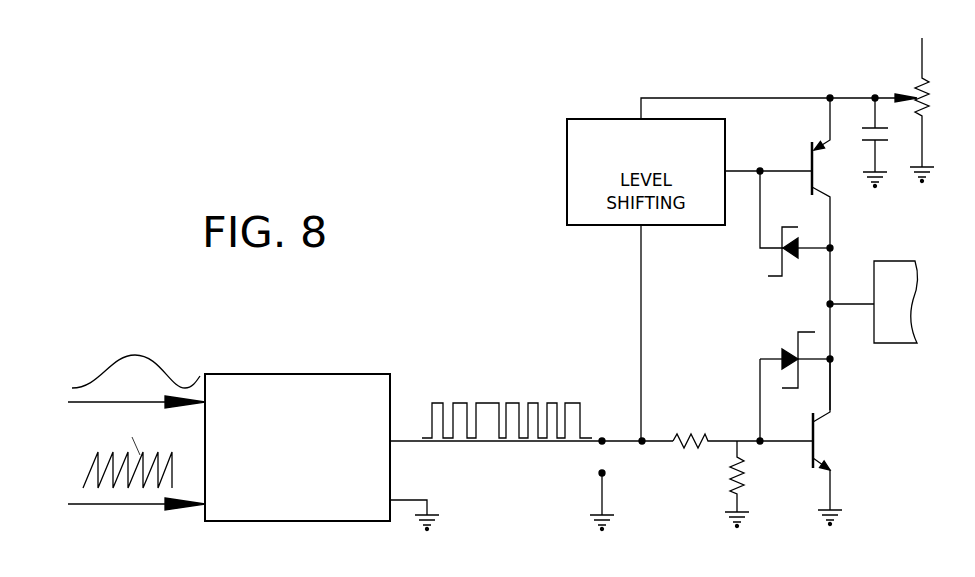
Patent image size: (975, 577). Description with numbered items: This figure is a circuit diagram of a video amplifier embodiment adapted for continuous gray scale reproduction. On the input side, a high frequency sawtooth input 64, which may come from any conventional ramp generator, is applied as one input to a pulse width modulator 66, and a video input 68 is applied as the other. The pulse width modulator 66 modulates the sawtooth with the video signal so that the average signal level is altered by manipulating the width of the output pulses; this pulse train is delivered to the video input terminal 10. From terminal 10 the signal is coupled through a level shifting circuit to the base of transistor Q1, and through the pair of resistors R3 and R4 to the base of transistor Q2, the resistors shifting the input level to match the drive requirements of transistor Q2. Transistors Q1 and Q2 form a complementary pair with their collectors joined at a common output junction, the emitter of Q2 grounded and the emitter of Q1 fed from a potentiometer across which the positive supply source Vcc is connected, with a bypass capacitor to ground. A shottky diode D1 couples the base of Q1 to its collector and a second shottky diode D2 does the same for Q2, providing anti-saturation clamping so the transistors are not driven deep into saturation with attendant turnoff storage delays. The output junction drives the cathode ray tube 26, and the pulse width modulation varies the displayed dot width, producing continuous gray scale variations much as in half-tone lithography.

The video input terminal 10 is at (601, 437).
The cathode ray tube 26 is at (894, 330).
The high frequency sawtooth input 64 is at (134, 505).
The pulse width modulator 66 is at (308, 512).
The video input 68 is at (124, 403).
The transistor Q1 is at (823, 165).
The transistor Q2 is at (822, 440).
The shottky diode D1 is at (773, 266).
The shottky diode D2 is at (790, 350).
The resistor R3 is at (707, 434).
The resistor R4 is at (742, 459).
The positive supply source Vcc is at (922, 102).